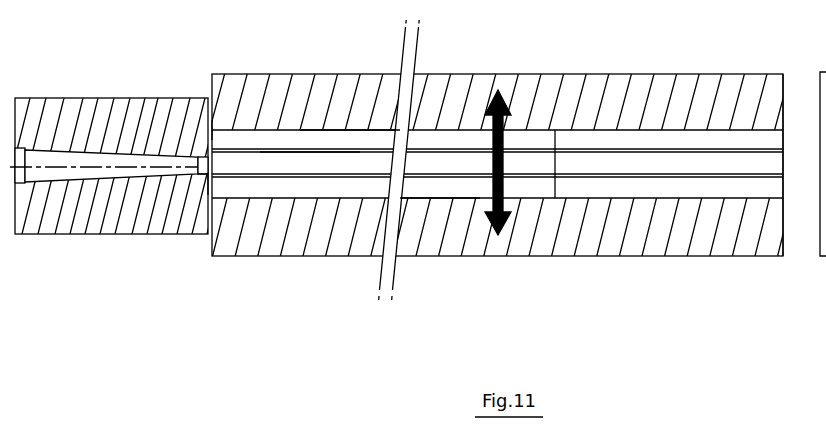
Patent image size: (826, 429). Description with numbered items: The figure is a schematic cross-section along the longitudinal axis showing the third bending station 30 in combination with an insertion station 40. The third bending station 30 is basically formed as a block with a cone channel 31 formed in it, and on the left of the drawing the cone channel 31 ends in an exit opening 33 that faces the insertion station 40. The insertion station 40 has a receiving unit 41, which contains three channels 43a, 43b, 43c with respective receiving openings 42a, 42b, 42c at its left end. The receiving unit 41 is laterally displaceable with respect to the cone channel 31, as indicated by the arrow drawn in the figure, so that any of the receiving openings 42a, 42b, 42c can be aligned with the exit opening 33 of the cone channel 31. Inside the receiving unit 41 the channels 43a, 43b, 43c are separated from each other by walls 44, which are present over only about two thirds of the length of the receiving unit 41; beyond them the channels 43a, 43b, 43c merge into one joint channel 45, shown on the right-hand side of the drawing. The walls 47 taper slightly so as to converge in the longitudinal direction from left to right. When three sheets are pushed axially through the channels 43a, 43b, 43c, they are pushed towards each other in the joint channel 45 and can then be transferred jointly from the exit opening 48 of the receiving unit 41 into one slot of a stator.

The third bending station 30 is at (72, 258).
The cone channel 31 is at (118, 157).
The exit opening 33 is at (211, 157).
The insertion station 40 is at (249, 283).
The receiving unit 41 is at (285, 100).
The receiving opening 42a is at (213, 130).
The receiving opening 42b is at (203, 175).
The receiving opening 42c is at (207, 185).
The channel 43a is at (350, 143).
The channel 43b is at (310, 163).
The channel 43c is at (425, 190).
The walls 44 is at (460, 150).
The joint channel 45 is at (733, 160).
The walls 47 is at (678, 128).
The exit opening 48 is at (783, 140).